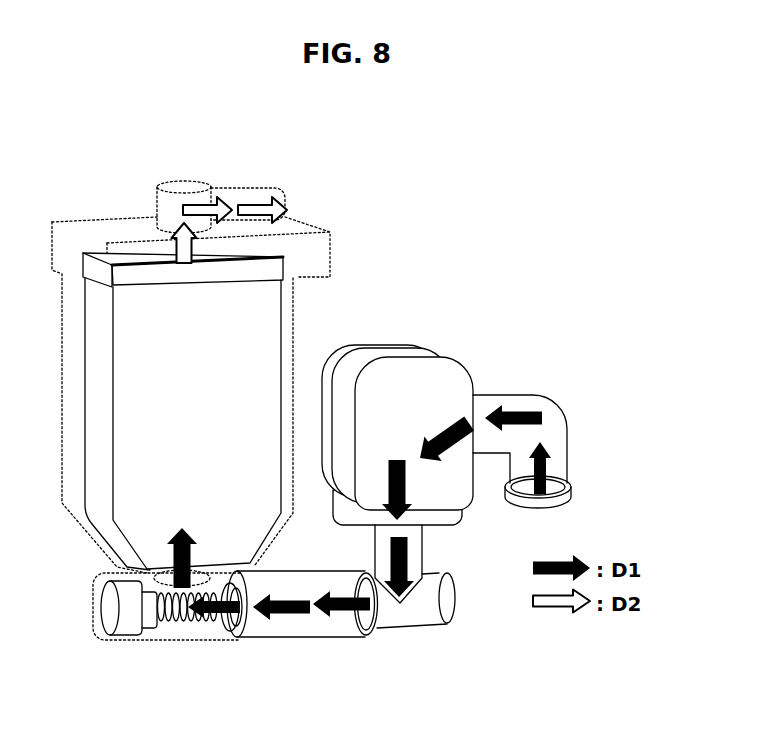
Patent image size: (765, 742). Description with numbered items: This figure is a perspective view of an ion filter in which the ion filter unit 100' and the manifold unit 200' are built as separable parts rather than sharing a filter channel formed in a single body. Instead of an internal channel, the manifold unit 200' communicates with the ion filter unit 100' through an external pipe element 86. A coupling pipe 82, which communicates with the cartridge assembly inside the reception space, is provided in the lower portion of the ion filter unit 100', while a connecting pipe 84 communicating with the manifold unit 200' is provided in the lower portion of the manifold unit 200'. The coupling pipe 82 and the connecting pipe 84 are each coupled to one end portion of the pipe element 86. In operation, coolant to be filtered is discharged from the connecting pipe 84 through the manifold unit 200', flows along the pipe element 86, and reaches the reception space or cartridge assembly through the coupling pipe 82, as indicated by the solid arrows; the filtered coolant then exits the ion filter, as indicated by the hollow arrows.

The ion filter unit 100' is at (191, 343).
The manifold unit 200' is at (446, 392).
The coupling pipe 82 is at (168, 632).
The connecting pipe 84 is at (415, 612).
The pipe element 86 is at (307, 623).